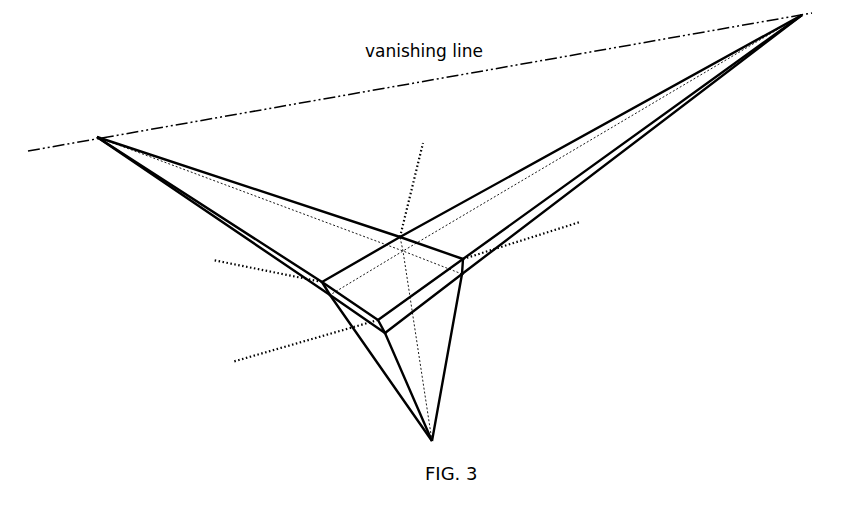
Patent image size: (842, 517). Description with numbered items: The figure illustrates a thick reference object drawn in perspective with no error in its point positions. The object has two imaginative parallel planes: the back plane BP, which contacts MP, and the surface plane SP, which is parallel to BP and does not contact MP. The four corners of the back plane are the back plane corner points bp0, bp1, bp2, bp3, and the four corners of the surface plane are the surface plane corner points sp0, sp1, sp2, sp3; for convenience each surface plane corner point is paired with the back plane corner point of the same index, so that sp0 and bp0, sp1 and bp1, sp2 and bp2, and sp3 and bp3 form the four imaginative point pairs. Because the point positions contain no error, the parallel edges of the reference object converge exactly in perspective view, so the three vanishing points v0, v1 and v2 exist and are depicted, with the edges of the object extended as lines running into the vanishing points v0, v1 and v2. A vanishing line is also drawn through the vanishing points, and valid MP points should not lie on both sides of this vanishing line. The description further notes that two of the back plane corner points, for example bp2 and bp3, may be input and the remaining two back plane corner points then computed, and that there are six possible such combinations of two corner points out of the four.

The vanishing point v0 is at (254, 219).
The vanishing point v1 is at (562, 174).
The vanishing point v2 is at (403, 355).
The back plane corner point bp0 is at (400, 237).
The back plane corner point bp1 is at (475, 272).
The back plane corner point bp2 is at (385, 333).
The back plane corner point bp3 is at (330, 295).
The surface plane corner point sp0 is at (433, 190).
The surface plane corner point sp1 is at (543, 240).
The surface plane corner point sp2 is at (280, 356).
The surface plane corner point sp3 is at (245, 274).